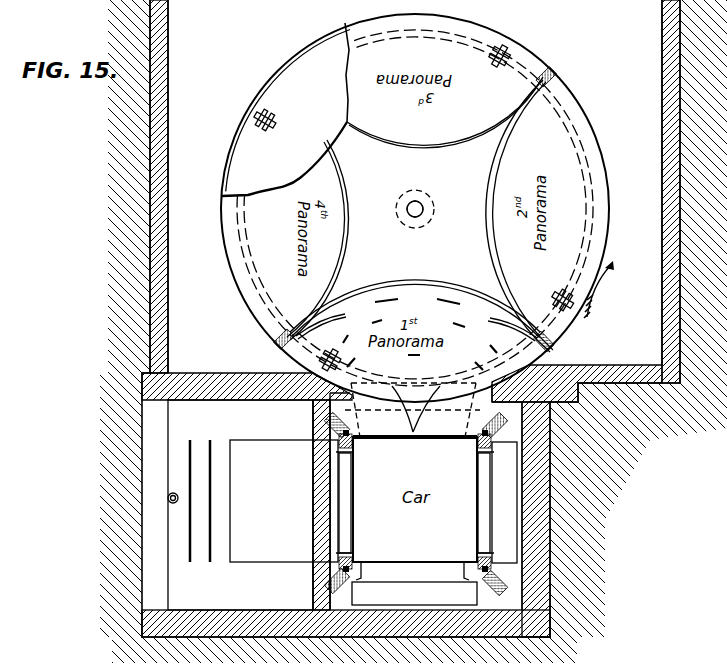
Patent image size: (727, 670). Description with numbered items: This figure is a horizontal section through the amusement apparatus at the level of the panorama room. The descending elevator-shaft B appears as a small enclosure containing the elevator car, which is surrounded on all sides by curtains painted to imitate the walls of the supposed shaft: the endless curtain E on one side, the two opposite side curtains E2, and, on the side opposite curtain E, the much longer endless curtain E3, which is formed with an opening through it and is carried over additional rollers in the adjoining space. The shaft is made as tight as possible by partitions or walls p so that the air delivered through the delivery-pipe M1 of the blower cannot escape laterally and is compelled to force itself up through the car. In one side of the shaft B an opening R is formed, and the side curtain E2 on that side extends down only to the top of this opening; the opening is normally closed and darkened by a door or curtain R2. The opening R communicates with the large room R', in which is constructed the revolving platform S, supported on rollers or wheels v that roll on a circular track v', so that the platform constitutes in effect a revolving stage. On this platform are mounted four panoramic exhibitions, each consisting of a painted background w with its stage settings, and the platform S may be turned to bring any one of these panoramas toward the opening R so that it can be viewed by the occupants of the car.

The rollers or wheels v is at (422, 204).
The circular track v' is at (460, 144).
The painted background w is at (420, 214).
The revolving platform S is at (438, 216).
The large room R' is at (609, 305).
The delivery-pipe M1 is at (168, 498).
The endless curtain E3 is at (358, 511).
The partitions or walls p is at (318, 467).
The opening R is at (415, 481).
The door or curtain R2 is at (435, 412).
The endless curtain E is at (504, 502).
The descending elevator-shaft B is at (470, 527).
The side curtain E2 is at (414, 594).